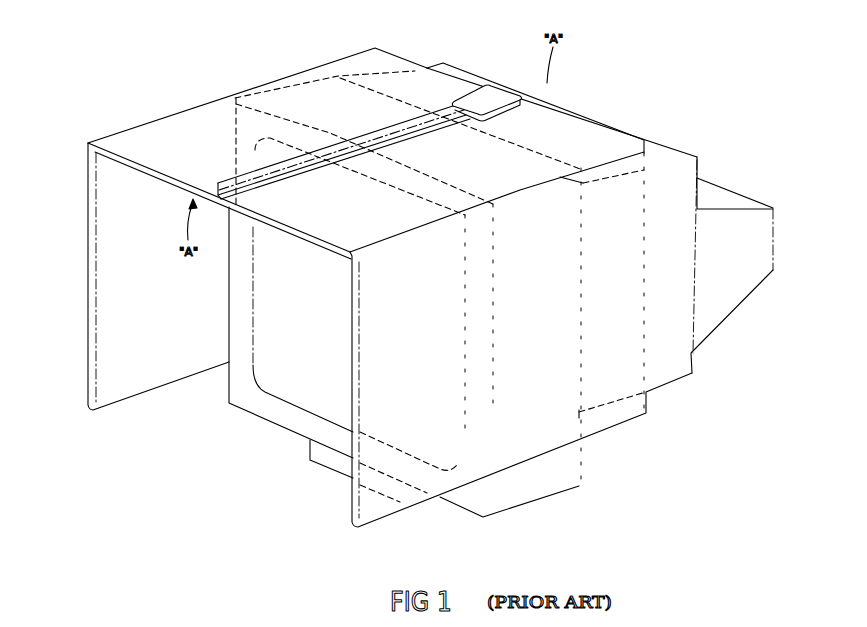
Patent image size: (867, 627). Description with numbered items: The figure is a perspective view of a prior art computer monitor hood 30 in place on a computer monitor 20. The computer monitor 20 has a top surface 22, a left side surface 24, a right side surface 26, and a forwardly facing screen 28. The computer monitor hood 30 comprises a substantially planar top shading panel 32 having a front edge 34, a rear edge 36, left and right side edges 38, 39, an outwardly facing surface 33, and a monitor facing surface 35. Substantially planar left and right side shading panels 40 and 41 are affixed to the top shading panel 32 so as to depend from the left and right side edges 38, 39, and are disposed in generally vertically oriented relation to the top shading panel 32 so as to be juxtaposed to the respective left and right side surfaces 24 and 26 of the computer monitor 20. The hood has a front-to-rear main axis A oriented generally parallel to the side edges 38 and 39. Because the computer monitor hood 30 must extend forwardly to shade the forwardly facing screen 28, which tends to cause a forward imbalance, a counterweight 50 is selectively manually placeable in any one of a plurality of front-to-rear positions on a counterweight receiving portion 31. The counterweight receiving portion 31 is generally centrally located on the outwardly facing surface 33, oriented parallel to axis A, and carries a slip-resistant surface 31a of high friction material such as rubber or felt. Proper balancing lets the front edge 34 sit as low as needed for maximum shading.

The computer monitor 20 is at (258, 484).
The top surface 22 is at (303, 100).
The left side surface 24 is at (262, 267).
The right side surface 26 is at (555, 477).
The forwardly facing screen 28 is at (322, 320).
The computer monitor hood 30 is at (118, 138).
The counterweight receiving portion 31 is at (298, 177).
The slip-resistant surface 31a is at (335, 147).
The top shading panel 32 is at (160, 163).
The outwardly facing surface 33 is at (207, 151).
The front edge 34 is at (177, 182).
The monitor facing surface 35 is at (355, 228).
The rear edge 36 is at (393, 62).
The left side edge 38 is at (163, 115).
The right side edge 39 is at (497, 200).
The left side shading panel 40 is at (108, 322).
The right side shading panel 41 is at (372, 513).
The counterweight 50 is at (495, 112).